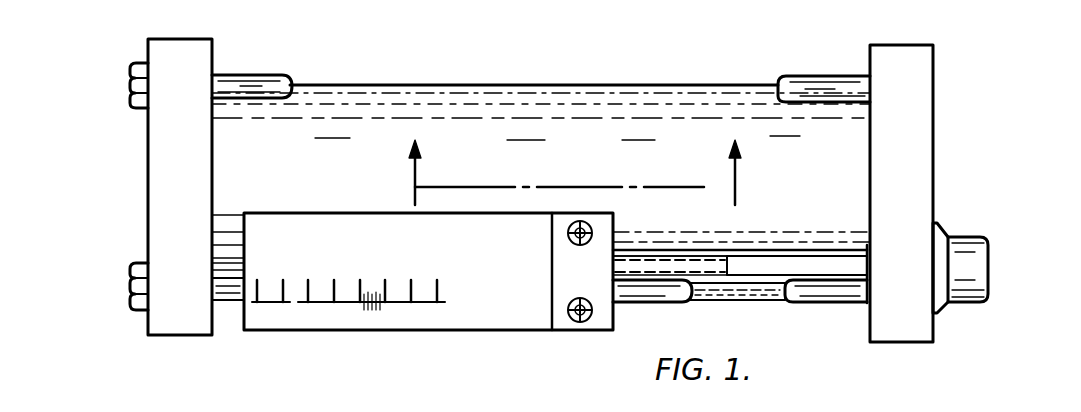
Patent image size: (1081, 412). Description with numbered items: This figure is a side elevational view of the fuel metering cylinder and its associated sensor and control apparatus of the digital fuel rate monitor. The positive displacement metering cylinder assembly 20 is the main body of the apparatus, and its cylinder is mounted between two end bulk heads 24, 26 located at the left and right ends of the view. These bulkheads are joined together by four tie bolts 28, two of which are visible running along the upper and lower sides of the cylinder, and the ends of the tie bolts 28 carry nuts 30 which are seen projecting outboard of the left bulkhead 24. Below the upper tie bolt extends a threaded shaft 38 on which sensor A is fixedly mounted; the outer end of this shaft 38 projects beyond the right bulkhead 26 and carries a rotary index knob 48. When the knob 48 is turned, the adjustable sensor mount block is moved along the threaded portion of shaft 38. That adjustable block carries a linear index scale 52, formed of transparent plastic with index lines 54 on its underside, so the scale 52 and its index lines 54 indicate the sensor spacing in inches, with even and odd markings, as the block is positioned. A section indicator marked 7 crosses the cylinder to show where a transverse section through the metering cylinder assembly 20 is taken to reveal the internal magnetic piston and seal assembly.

The positive displacement metering cylinder assembly 20 is at (440, 100).
The end bulk head 24 is at (162, 182).
The end bulk head 26 is at (920, 198).
The tie bolt 28 is at (270, 92).
The nut 30 is at (135, 81).
The threaded shaft 38 is at (668, 264).
The rotary index knob 48 is at (975, 248).
The linear index scale 52 is at (396, 312).
The index lines 54 is at (338, 232).
The section line 7- 7 is at (584, 171).